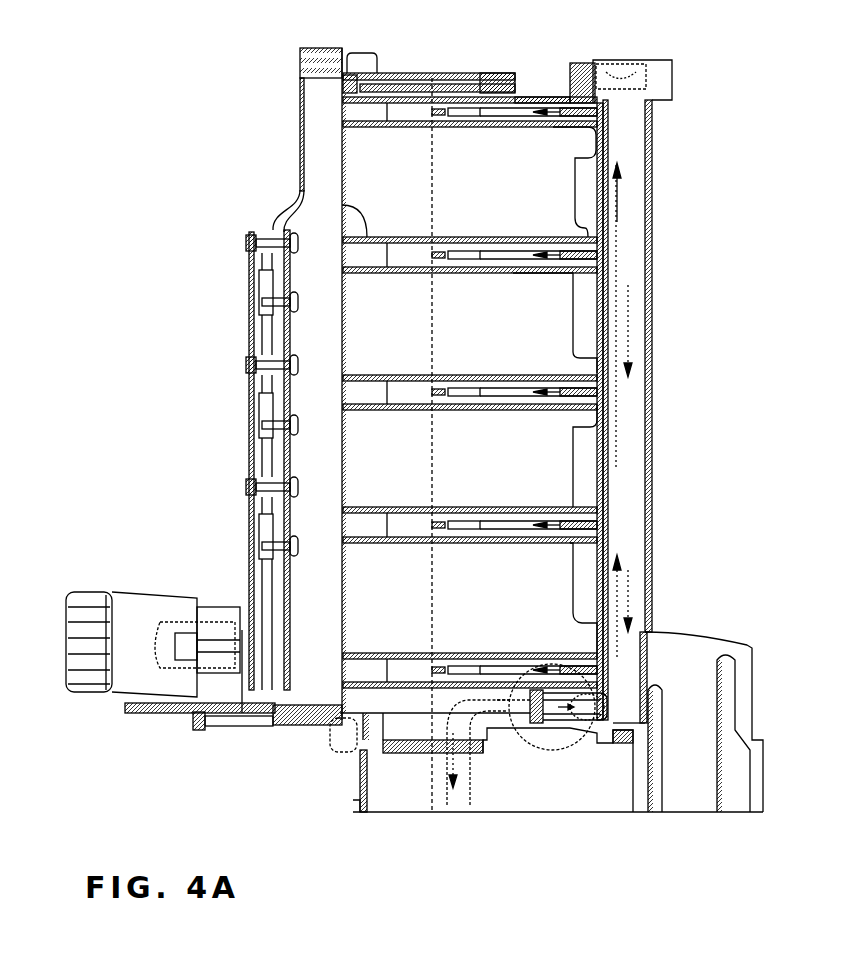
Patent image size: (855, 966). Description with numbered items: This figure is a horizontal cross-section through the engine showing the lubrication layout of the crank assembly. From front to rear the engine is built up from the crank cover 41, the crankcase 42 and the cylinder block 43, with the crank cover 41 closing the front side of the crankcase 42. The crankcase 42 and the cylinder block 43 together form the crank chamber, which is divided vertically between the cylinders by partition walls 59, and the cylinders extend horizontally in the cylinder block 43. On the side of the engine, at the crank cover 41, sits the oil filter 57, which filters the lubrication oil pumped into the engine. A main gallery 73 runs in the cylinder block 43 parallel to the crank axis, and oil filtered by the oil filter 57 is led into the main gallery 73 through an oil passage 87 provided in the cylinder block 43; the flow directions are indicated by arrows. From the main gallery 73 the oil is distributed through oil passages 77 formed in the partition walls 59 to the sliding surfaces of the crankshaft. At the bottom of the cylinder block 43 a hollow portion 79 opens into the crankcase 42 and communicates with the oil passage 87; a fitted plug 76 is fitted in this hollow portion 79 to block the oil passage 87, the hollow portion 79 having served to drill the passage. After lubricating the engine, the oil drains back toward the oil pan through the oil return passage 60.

The crank cover 41 is at (300, 108).
The crankcase 42 is at (342, 748).
The cylinder block 43 is at (541, 97).
The oil filter 57 is at (139, 607).
The partition walls 59 is at (340, 205).
The oil return passage 60 is at (383, 698).
The main gallery 73 is at (652, 163).
The fitted plug 76 is at (530, 762).
The oil passages 77 is at (585, 250).
The hollow portion 79 is at (470, 762).
The oil passage 87 is at (570, 752).